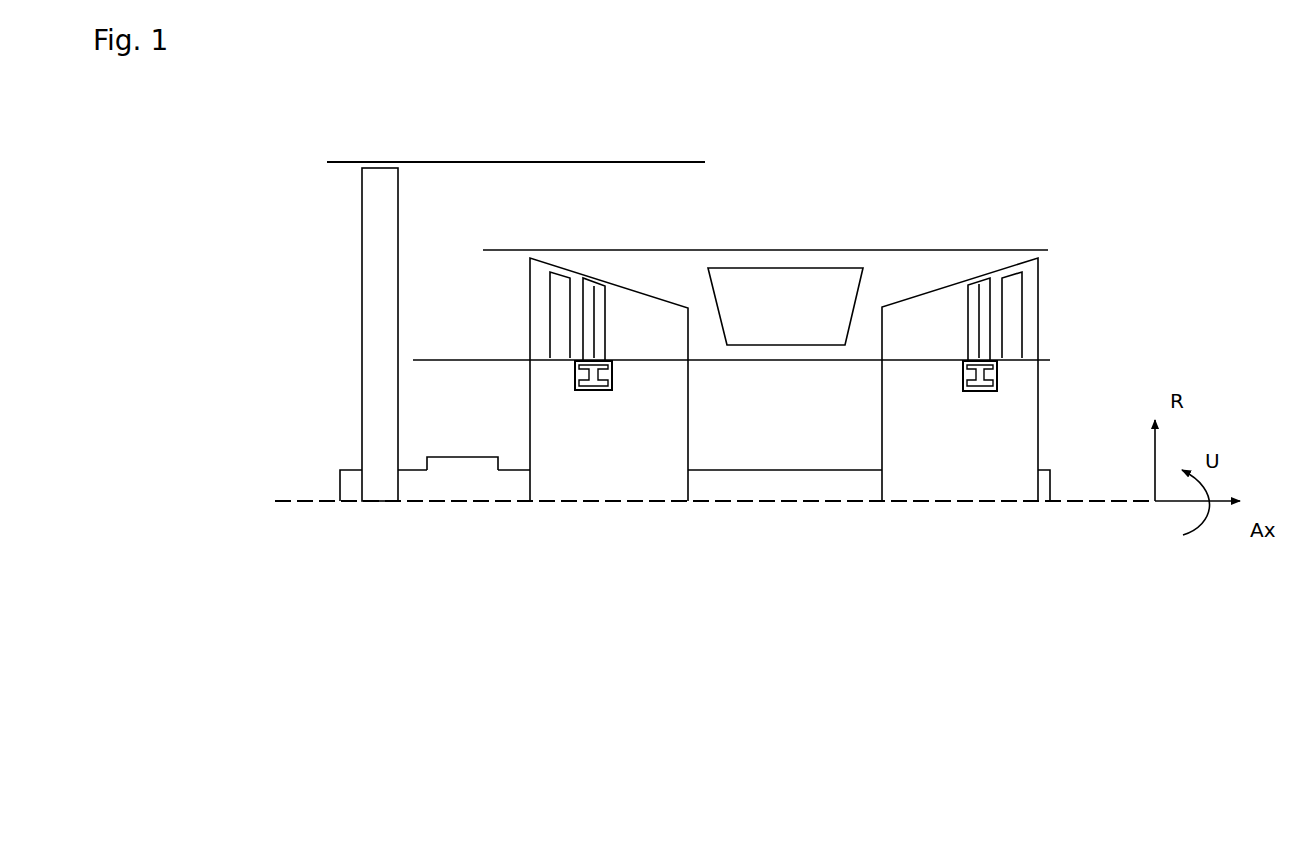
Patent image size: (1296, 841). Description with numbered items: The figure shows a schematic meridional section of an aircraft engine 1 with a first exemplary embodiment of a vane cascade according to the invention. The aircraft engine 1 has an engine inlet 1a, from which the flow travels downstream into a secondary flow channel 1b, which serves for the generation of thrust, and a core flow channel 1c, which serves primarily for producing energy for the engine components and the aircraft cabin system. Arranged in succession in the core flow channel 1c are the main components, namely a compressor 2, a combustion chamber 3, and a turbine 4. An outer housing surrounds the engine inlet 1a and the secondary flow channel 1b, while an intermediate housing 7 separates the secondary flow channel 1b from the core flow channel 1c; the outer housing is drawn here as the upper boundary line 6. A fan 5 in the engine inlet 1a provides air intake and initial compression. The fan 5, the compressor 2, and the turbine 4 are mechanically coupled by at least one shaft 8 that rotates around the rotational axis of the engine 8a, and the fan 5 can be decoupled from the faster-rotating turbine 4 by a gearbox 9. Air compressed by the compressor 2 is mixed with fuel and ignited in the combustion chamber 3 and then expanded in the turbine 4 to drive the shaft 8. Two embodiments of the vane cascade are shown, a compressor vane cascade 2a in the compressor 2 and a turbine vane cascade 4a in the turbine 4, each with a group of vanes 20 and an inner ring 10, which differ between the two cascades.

The aircraft engine 1 is at (305, 133).
The engine inlet 1a is at (349, 273).
The secondary flow channel 1b is at (528, 221).
The core flow channel 1c is at (526, 310).
The compressor 2 is at (627, 276).
The compressor vane cascade 2a is at (597, 265).
The combustion chamber 3 is at (765, 265).
The turbine 4 is at (945, 285).
The turbine vane cascade 4a is at (985, 271).
The fan 5 is at (383, 156).
The outer casing wall 6 is at (563, 158).
The intermediate housing 7 is at (838, 246).
The shaft 8 is at (350, 466).
The rotational axis of the engine 8a is at (285, 497).
The gearbox 9 is at (460, 452).
The inner ring 10 is at (598, 393).
The vanes 20 is at (598, 342).